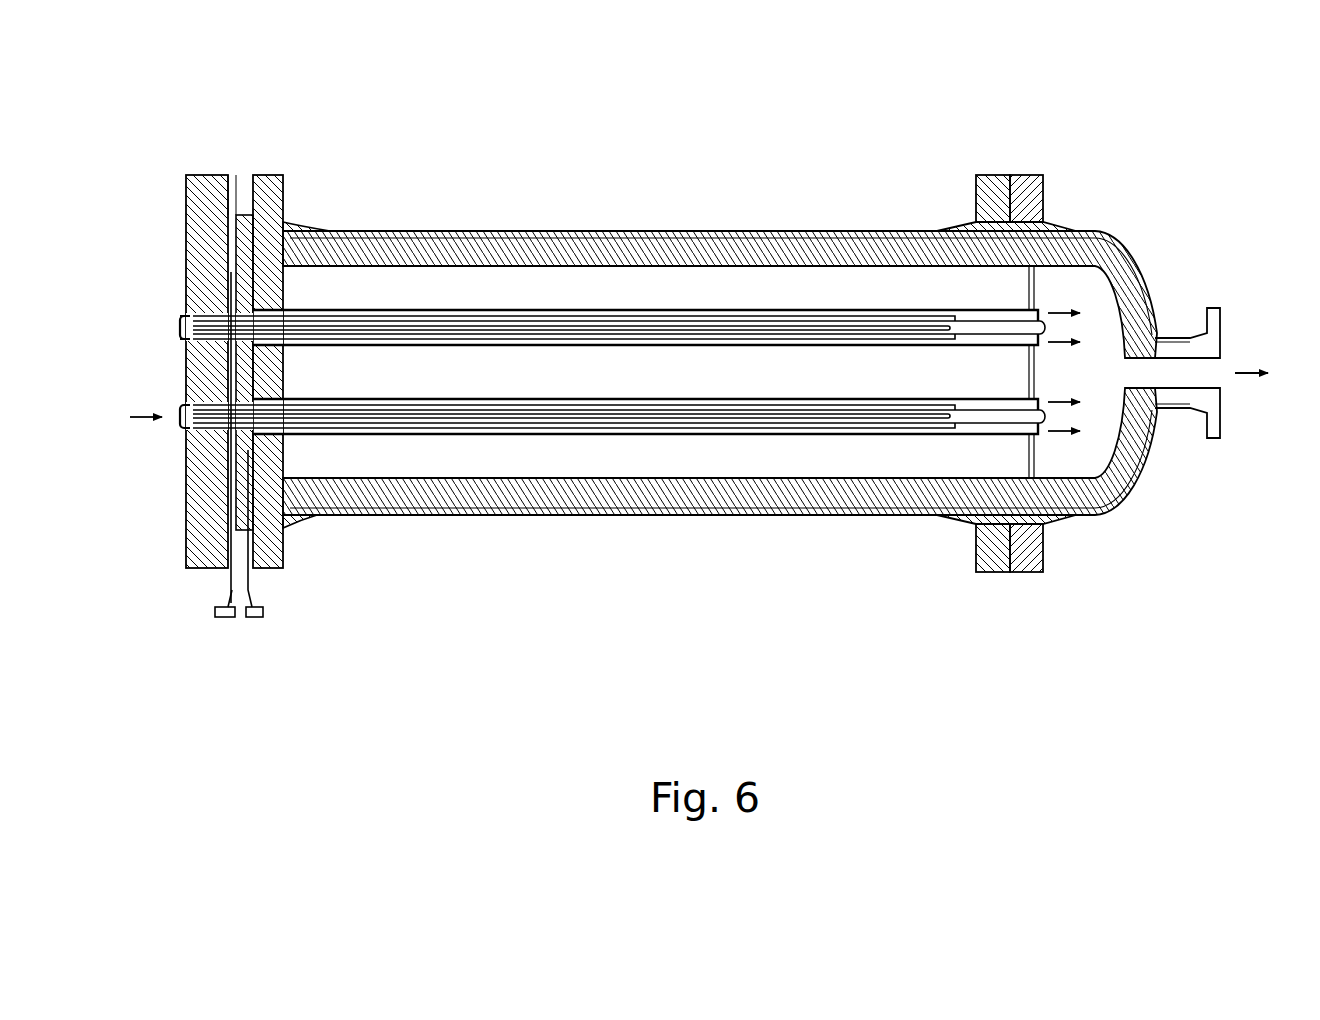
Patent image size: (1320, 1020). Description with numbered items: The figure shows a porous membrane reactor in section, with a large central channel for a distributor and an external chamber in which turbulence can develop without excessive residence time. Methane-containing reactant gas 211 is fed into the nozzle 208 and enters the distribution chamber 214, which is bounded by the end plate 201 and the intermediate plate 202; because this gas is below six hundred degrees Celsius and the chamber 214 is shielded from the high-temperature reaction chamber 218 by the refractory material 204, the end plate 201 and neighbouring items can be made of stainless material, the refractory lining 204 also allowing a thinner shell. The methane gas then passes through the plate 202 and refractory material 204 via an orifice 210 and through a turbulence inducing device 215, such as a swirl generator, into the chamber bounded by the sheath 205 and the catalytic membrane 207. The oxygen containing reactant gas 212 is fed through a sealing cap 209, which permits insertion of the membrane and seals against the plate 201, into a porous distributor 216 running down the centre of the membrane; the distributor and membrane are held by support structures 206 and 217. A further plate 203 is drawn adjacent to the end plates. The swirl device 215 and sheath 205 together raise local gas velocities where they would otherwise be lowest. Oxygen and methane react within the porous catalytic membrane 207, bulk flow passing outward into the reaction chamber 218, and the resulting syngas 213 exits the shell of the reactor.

The end plate 201 is at (212, 185).
The intermediate plate 202 is at (237, 217).
The second end plate 203 is at (263, 188).
The refractory material 204 is at (263, 273).
The sheath 205 is at (355, 307).
The support structure 206 is at (502, 320).
The catalytic membrane 207 is at (623, 320).
The nozzle 208 is at (253, 603).
The sealing cap 209 is at (183, 426).
The orifice 210 is at (232, 272).
The reactant gas 211 is at (242, 640).
The oxygen containing reactant gas 212 is at (162, 329).
The syngas 213 is at (1225, 354).
The distribution chamber 214 is at (234, 225).
The turbulence inducing device 215 is at (352, 512).
The porous distributor 216 is at (405, 435).
The support structure 217 is at (547, 435).
The reaction chamber 218 is at (772, 270).